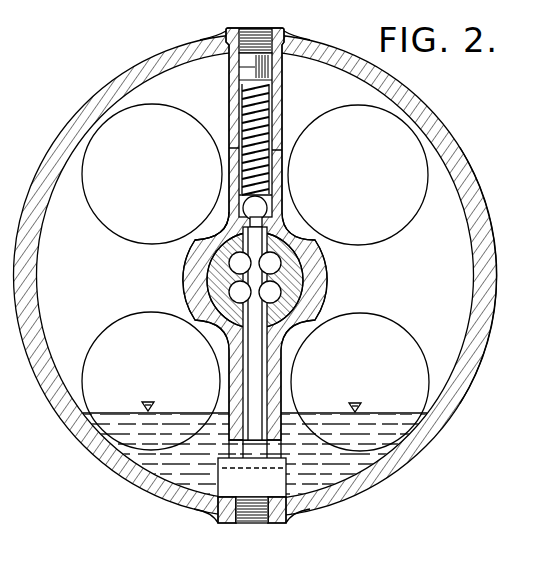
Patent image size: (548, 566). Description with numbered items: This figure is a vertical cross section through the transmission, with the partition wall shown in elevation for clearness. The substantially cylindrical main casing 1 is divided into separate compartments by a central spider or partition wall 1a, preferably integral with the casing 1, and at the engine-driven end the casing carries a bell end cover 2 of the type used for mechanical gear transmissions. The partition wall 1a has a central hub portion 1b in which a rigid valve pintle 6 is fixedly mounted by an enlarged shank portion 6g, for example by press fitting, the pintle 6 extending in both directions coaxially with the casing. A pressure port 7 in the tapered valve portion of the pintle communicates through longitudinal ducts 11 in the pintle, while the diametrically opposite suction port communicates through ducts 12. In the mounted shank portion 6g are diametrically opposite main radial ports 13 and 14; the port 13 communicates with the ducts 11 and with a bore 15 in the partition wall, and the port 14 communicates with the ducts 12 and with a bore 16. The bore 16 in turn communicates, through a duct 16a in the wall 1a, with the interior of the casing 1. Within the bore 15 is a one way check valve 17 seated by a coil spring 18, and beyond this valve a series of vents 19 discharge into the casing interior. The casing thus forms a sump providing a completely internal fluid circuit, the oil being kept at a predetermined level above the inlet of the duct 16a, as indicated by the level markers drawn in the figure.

The main casing 1 is at (480, 352).
The partition wall 1a is at (456, 321).
The hub portion 1b is at (346, 318).
The bell end cover 2 is at (284, 489).
The valve pintle 6 is at (318, 305).
The shank portion 6g is at (221, 247).
The port 7 is at (150, 402).
The longitudinal ducts 11 is at (276, 262).
The ducts 12 is at (277, 290).
The main radial port 13 is at (300, 221).
The main radial port 14 is at (262, 318).
The bore 15 is at (275, 200).
The bore 16 is at (258, 372).
The duct 16a is at (203, 514).
The one way check valve 17 is at (275, 179).
The coil spring 18 is at (272, 163).
The vents 19 is at (280, 151).